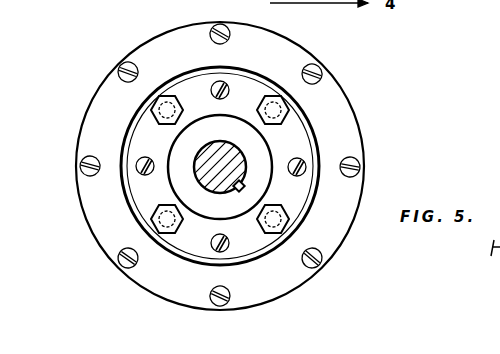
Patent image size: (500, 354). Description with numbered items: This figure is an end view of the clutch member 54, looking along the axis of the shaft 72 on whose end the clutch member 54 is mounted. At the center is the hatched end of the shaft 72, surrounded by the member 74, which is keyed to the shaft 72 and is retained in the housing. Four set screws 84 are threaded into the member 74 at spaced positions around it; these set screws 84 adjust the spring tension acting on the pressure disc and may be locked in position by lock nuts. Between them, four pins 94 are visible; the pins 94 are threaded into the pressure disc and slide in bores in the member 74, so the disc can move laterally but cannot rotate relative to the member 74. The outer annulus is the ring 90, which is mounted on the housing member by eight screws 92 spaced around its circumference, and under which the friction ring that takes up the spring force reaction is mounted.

The clutch member 54 is at (207, 155).
The shaft 72 is at (223, 146).
The member 74 is at (262, 170).
The set screws 84 is at (270, 100).
The ring 90 is at (345, 140).
The screws 92 is at (224, 27).
The pins 94 is at (216, 84).